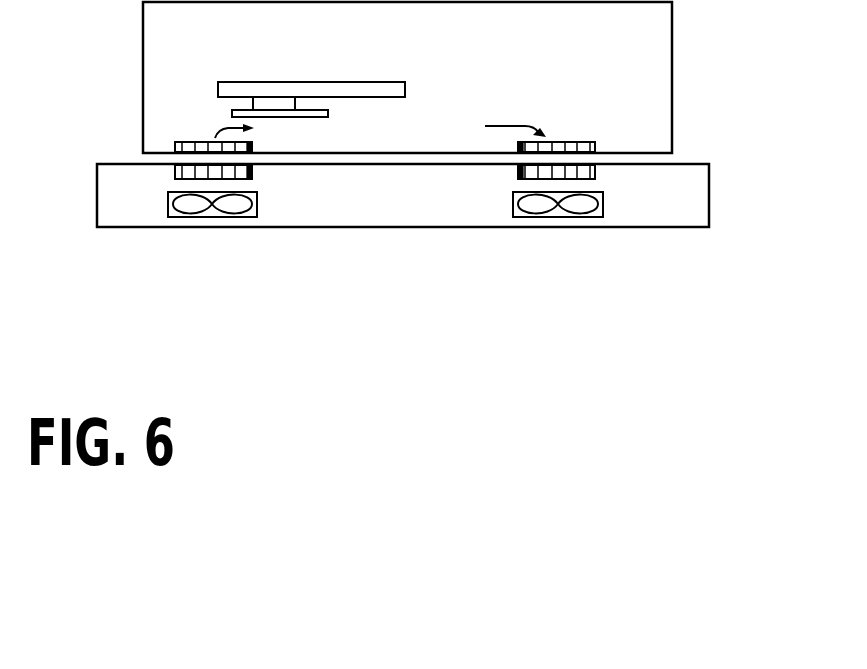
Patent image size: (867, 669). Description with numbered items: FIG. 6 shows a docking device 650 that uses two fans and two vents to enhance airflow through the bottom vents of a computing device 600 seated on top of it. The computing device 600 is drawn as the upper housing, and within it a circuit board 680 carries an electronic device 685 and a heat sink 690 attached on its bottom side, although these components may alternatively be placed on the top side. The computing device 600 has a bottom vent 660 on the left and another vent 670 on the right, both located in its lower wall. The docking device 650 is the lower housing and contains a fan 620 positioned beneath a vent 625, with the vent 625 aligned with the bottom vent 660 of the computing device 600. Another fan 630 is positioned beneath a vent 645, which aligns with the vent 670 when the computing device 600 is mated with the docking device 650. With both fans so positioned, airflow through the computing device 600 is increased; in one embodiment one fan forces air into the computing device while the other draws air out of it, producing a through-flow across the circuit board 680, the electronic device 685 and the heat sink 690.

The computing device 600 is at (768, 62).
The docking device 650 is at (403, 198).
The circuit board 680 is at (392, 82).
The electronic device 685 is at (272, 105).
The heat sink 690 is at (328, 117).
The bottom vent 660 is at (252, 148).
The vent 670 is at (595, 147).
The vent 625 is at (252, 172).
The vent 645 is at (596, 172).
The fan 620 is at (257, 203).
The fan 630 is at (513, 205).